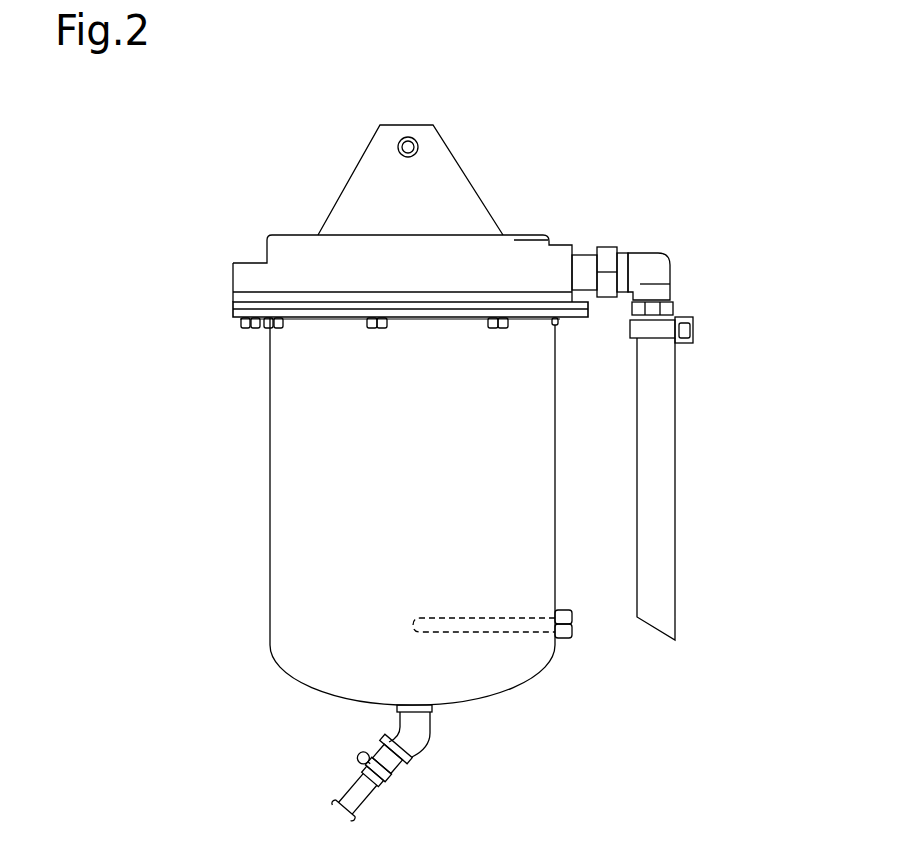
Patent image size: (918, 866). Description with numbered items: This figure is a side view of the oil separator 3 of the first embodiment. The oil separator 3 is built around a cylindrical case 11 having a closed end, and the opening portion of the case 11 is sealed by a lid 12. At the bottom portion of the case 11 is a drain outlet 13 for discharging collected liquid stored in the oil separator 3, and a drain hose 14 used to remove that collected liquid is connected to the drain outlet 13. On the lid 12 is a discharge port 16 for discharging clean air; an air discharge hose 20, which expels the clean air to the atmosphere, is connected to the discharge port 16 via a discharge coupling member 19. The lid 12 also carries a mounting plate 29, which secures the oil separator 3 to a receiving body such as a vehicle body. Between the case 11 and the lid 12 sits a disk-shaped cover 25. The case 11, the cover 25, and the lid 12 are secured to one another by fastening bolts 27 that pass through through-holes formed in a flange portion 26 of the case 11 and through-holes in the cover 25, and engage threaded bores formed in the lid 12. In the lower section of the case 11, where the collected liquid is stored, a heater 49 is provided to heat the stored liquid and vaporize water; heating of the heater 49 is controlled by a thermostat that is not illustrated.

The oil separator 3 is at (547, 105).
The cylindrical case 11 is at (556, 458).
The lid 12 is at (296, 235).
The drain outlet 13 is at (432, 740).
The drain hose 14 is at (368, 800).
The discharge port 16 is at (570, 245).
The discharge coupling member 19 is at (668, 256).
The air discharge hose 20 is at (677, 492).
The disk-shaped cover 25 is at (233, 309).
The flange portion 26 is at (233, 320).
The fastening bolts 27 is at (256, 330).
The mounting plate 29 is at (456, 158).
The heater 49 is at (478, 618).